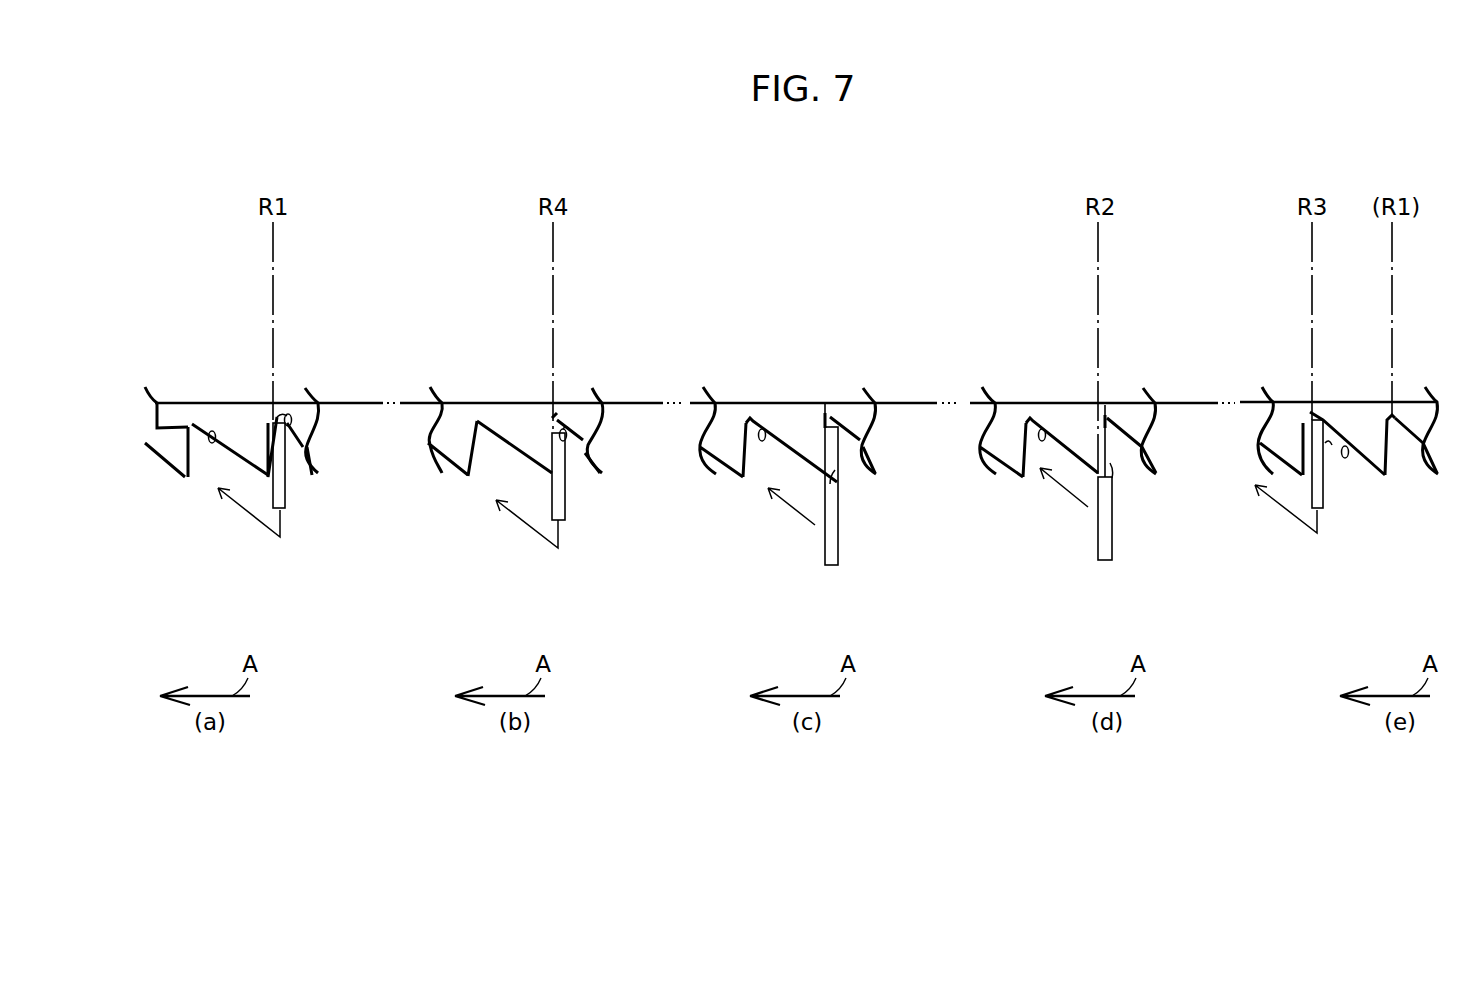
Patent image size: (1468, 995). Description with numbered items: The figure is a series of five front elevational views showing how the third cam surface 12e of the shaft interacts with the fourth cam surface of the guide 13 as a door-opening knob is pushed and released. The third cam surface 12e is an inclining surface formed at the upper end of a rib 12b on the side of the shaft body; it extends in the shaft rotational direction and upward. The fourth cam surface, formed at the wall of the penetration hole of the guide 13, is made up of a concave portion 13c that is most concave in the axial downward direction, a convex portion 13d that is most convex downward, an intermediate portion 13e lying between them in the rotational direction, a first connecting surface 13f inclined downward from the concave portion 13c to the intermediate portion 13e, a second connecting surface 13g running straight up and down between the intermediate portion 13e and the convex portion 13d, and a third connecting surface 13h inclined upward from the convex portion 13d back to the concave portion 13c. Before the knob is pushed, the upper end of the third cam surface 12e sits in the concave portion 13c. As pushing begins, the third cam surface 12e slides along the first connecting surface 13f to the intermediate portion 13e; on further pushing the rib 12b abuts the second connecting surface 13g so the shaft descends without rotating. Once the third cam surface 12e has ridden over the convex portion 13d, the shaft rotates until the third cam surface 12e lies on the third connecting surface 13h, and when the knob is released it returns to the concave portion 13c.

The rib 12b is at (283, 512).
The third cam surface 12e is at (300, 473).
The guide 13 is at (240, 437).
The concave portion 13c is at (188, 418).
The convex portion 13d is at (186, 480).
The intermediate portion 13e is at (262, 430).
The first connecting surface 13f is at (202, 463).
The second connecting surface 13g is at (192, 433).
The third connecting surface 13h is at (212, 431).